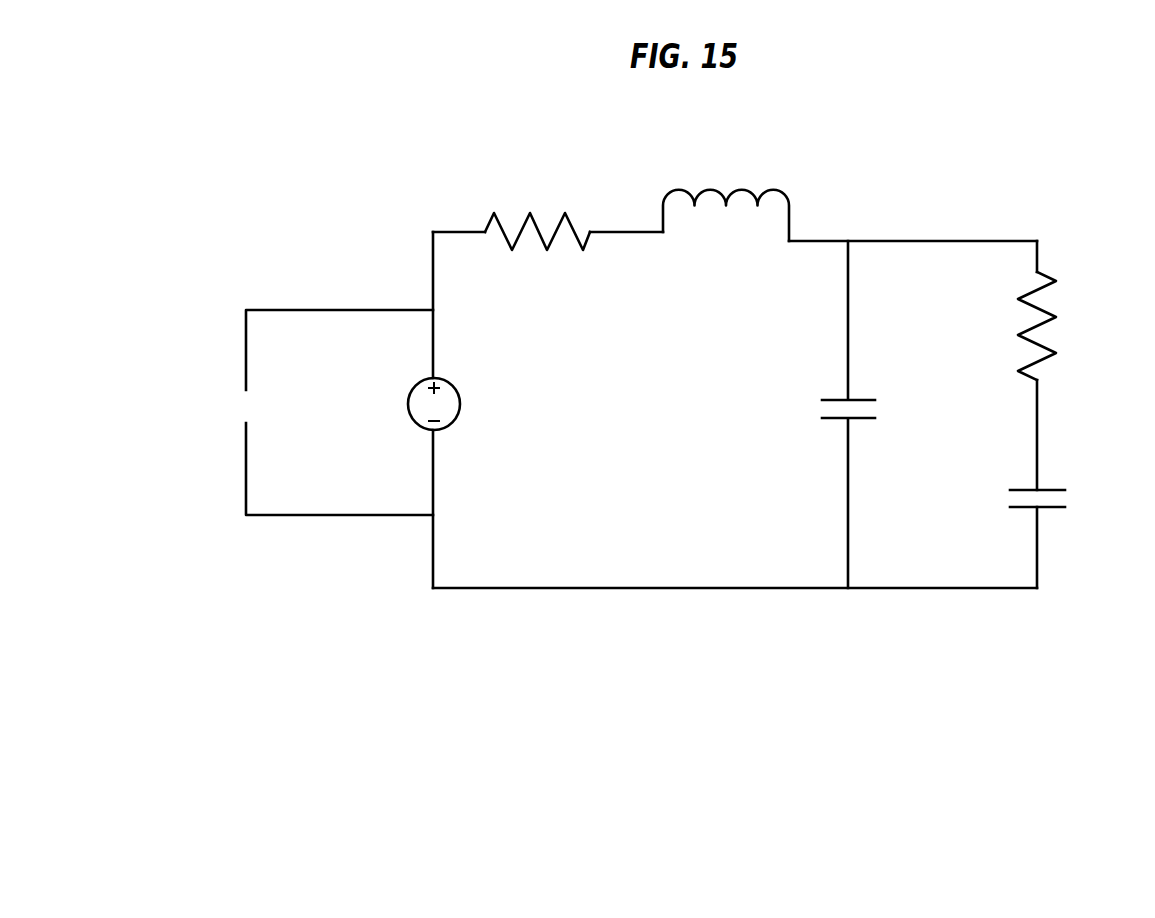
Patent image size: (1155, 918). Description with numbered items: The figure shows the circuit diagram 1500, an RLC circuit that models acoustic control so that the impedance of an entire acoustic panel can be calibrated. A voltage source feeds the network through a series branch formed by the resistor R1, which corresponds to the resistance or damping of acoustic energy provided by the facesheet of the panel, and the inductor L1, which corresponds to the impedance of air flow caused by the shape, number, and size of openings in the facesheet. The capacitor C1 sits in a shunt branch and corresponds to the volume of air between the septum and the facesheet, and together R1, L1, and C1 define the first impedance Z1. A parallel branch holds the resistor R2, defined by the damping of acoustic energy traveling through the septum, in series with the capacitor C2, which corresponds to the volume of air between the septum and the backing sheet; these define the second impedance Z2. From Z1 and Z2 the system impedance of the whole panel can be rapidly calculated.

The circuit diagram 1500 is at (1048, 133).
The resistor R1 is at (537, 211).
The inductor L1 is at (726, 199).
The capacitor C1 is at (829, 414).
The resistor R2 is at (1056, 326).
The capacitor C2 is at (1056, 502).
The impedance Z1 is at (638, 409).
The impedance Z2 is at (950, 407).